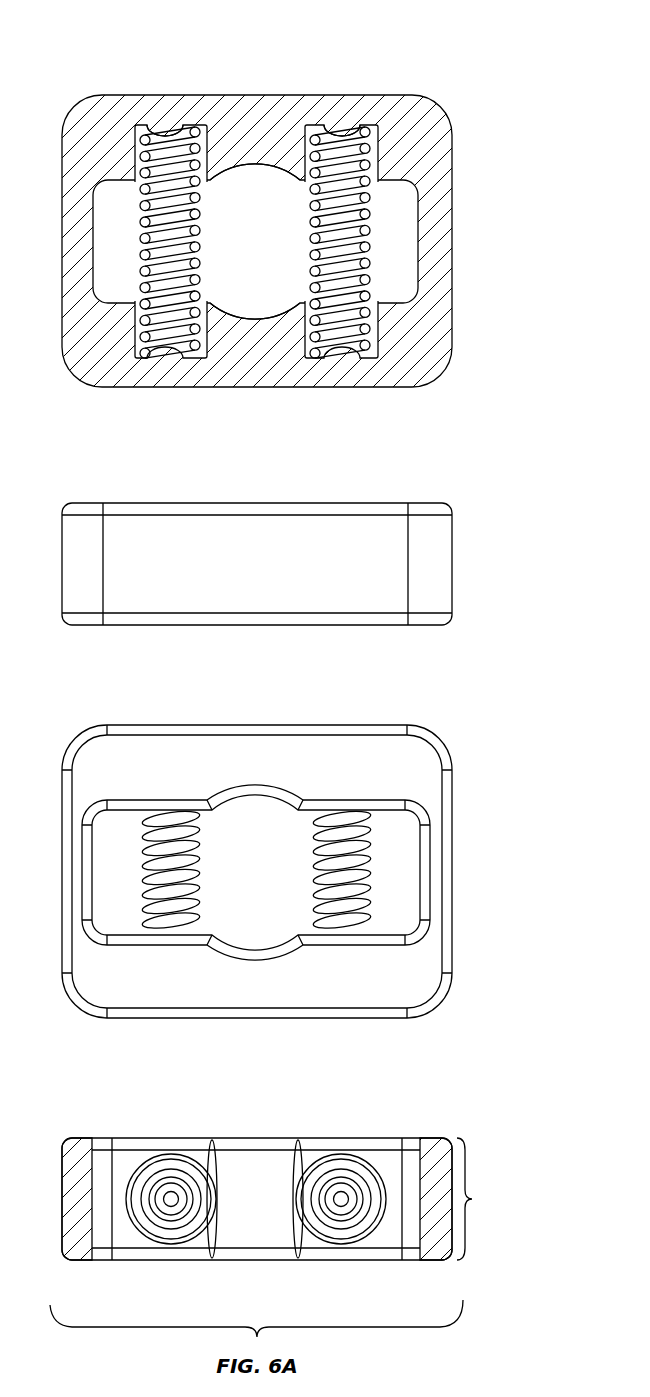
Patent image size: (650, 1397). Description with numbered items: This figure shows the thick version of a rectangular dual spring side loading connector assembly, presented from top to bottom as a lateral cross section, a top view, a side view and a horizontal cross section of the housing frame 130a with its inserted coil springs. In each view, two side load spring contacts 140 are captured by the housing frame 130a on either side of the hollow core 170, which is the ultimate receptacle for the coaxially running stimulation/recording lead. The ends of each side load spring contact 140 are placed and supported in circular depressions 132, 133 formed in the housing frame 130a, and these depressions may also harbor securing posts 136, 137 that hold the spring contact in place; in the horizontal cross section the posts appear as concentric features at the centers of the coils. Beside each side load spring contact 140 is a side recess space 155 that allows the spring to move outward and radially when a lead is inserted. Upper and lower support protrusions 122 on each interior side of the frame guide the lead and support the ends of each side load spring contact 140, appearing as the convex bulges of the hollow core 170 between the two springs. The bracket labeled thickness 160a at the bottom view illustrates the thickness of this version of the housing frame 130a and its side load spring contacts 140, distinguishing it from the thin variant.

The housing frame 130a is at (206, 38).
The support protrusion 122 is at (257, 163).
The depression 132 is at (150, 137).
The securing post 136 is at (170, 108).
The side recess space 155 is at (400, 233).
The hollow core 170 is at (233, 253).
The depression 133 is at (130, 343).
The securing post 137 is at (172, 364).
The side load spring contact 140 is at (335, 837).
The thickness 160a is at (490, 1199).